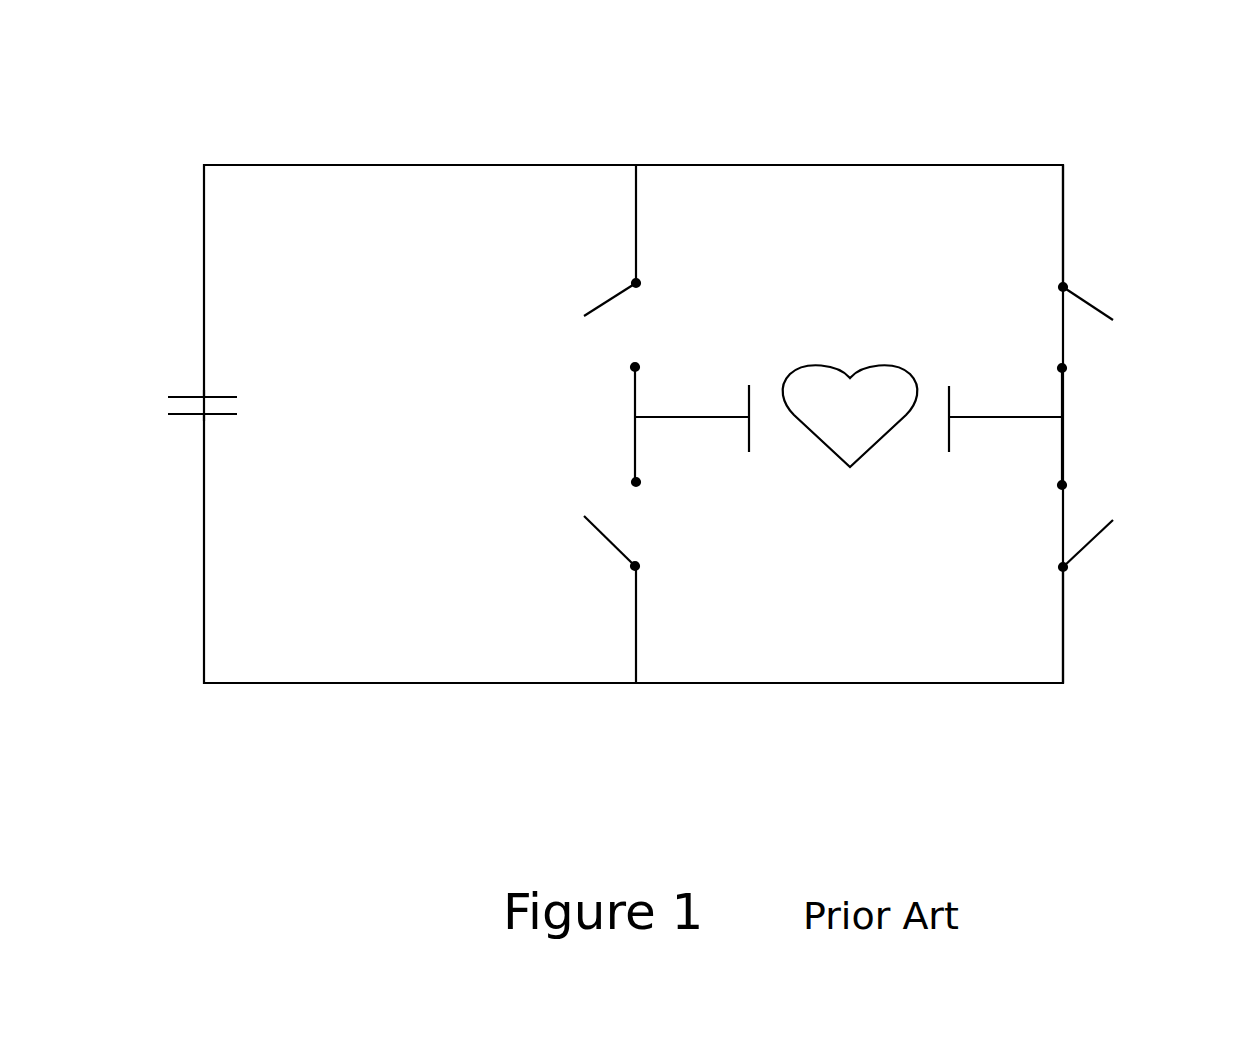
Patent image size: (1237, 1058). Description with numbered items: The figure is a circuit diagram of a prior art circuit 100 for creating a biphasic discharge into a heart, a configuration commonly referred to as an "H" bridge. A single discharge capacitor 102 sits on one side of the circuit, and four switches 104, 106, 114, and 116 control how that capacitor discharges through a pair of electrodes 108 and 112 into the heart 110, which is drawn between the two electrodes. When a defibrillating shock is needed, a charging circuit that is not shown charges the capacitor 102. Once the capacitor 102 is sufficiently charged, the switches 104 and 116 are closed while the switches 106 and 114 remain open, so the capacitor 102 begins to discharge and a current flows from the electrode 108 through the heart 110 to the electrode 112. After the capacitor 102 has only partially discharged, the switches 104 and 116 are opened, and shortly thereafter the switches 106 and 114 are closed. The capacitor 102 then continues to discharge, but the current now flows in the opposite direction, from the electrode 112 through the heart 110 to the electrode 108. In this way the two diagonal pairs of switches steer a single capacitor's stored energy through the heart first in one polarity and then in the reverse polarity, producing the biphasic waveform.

The defibrillator circuit 100 is at (186, 130).
The capacitor 102 is at (220, 390).
The switch 104 is at (606, 304).
The switch 106 is at (622, 553).
The electrode 108 is at (747, 398).
The heart 110 is at (878, 397).
The electrode 112 is at (950, 405).
The switch 114 is at (1098, 307).
The switch 116 is at (1093, 540).